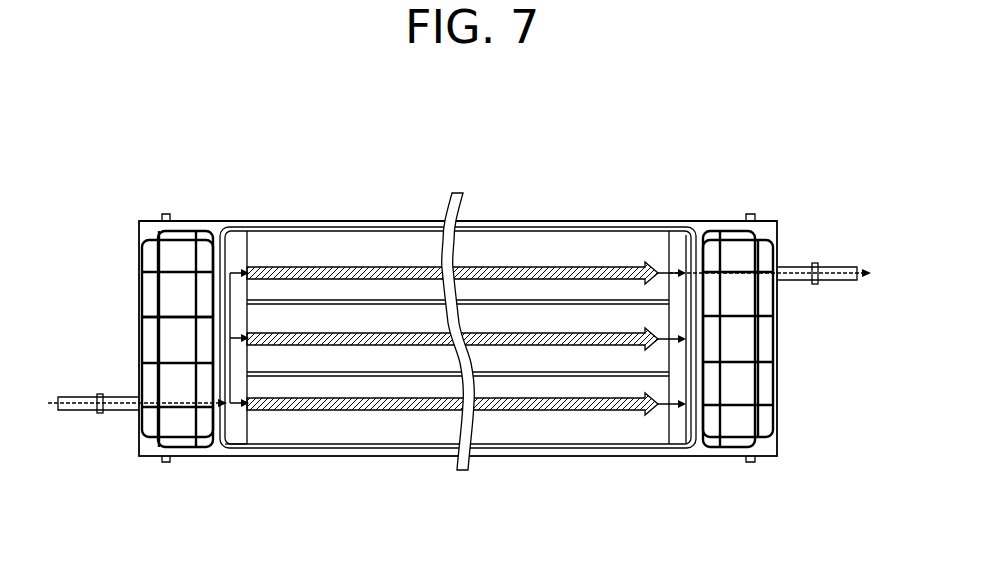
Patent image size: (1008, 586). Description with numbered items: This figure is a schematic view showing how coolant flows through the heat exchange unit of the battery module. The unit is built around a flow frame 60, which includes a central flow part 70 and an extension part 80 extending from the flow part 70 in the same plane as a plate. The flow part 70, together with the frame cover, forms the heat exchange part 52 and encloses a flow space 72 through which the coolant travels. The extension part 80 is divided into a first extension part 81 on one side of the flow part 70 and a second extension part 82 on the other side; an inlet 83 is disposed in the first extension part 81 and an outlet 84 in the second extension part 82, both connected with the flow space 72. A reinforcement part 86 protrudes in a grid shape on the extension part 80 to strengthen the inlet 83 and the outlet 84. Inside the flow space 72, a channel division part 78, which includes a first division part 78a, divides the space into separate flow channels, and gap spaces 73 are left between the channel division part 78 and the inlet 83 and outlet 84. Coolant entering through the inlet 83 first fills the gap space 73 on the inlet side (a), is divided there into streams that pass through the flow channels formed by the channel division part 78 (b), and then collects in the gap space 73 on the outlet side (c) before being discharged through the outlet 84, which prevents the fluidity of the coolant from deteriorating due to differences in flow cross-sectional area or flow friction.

The heat exchange part 52 is at (585, 212).
The flow frame 60 is at (183, 212).
The flow part 70 is at (308, 221).
The flow space 72 is at (378, 428).
The gap space 73 is at (260, 447).
The channel division part 78 is at (458, 408).
The first division part 78a is at (458, 302).
The extension part 80 is at (460, 373).
The first extension part 81 is at (180, 352).
The second extension part 82 is at (731, 395).
The inlet 83 is at (77, 405).
The outlet 84 is at (832, 282).
The reinforcement part 86 is at (175, 313).
The coolant inflow into gap space a is at (240, 373).
The coolant flow through flow channels b is at (395, 268).
The coolant flow into outlet-side gap space c is at (678, 273).